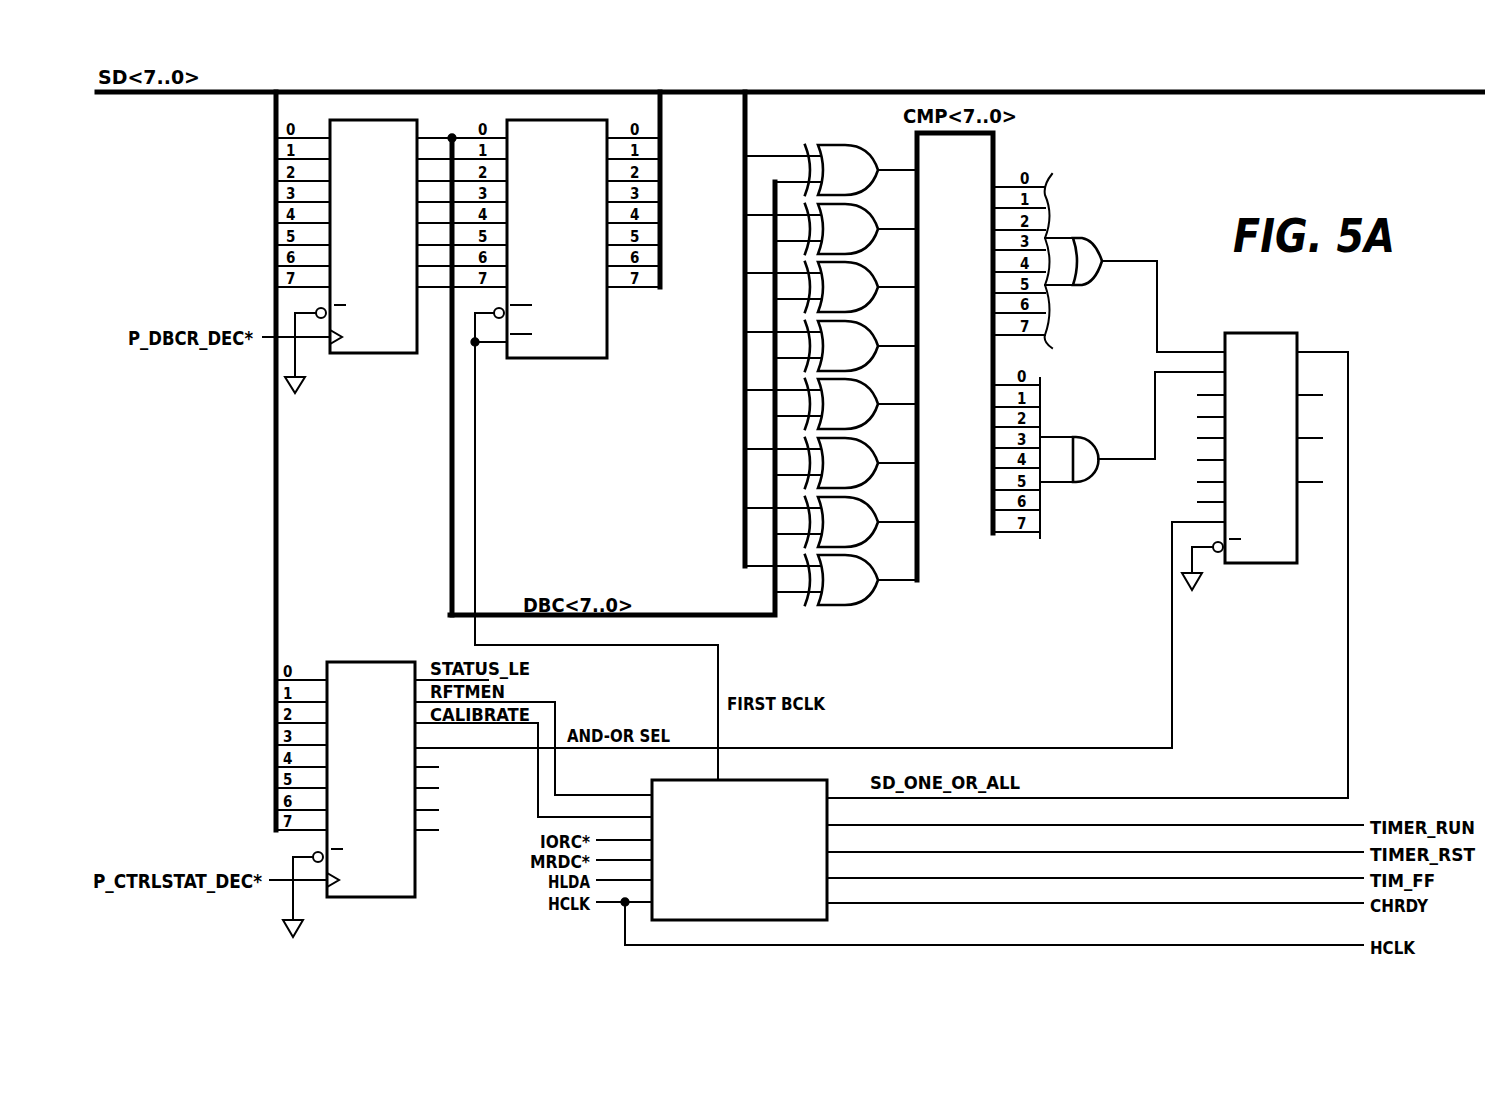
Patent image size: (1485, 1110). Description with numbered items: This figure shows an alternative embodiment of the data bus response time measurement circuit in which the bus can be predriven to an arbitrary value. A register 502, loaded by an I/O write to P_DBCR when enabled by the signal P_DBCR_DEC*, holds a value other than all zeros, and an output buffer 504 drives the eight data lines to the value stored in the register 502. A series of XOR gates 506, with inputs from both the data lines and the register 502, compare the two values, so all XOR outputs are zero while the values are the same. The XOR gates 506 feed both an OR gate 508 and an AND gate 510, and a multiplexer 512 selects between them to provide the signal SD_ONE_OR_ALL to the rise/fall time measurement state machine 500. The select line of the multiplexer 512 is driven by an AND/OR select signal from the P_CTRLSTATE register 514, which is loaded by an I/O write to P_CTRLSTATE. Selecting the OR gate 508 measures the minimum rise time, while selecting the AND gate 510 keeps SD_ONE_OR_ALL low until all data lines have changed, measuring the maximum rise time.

The rise/fall time measurement state machine 500 is at (795, 780).
The register 502 is at (355, 353).
The output buffer 504 is at (572, 358).
The XOR gates 506 is at (838, 612).
The OR gate 508 is at (1078, 238).
The AND gate 510 is at (1080, 482).
The multiplexer 512 is at (1272, 563).
The P_CTRLSTATE register 514 is at (353, 897).